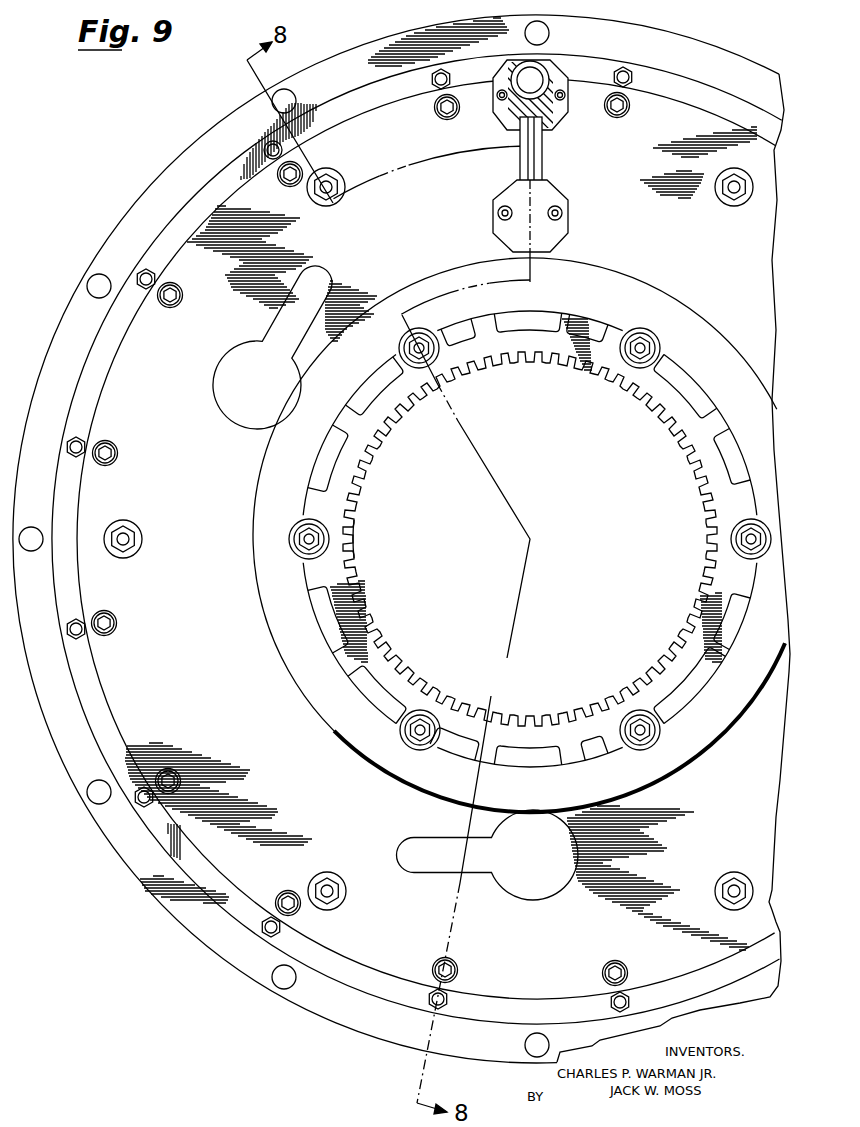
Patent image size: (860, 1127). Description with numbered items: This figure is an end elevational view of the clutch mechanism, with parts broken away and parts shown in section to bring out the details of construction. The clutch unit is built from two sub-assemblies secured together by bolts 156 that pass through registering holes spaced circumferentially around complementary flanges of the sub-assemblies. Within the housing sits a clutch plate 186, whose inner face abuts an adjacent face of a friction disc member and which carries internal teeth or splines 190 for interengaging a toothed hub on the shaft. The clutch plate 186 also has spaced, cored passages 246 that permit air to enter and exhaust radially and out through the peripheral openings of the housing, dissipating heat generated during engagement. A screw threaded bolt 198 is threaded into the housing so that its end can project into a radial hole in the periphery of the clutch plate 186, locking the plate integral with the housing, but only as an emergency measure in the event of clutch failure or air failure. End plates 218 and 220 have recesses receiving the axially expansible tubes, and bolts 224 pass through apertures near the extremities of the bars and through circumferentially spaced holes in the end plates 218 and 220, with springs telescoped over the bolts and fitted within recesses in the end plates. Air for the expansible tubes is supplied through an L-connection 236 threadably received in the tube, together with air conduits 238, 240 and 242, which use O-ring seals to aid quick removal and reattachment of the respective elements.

The bolts 156 is at (252, 962).
The clutch plate 186 is at (336, 500).
The internal teeth or splines 190 is at (347, 548).
The screw threaded bolt 198 is at (644, 84).
The end plate 218 is at (158, 178).
The end plate 220 is at (672, 248).
The bolts 224 is at (292, 540).
The L-connection 236 is at (568, 214).
The air conduit 238 is at (543, 152).
The air conduit 240 is at (566, 118).
The air conduit 242 is at (556, 94).
The cored passages 246 is at (722, 462).